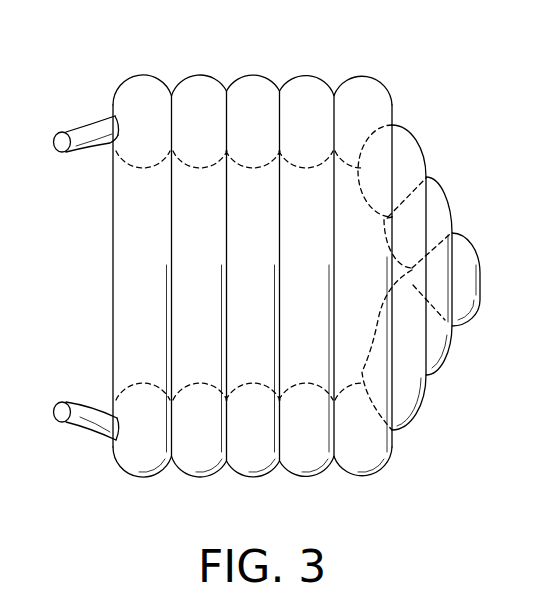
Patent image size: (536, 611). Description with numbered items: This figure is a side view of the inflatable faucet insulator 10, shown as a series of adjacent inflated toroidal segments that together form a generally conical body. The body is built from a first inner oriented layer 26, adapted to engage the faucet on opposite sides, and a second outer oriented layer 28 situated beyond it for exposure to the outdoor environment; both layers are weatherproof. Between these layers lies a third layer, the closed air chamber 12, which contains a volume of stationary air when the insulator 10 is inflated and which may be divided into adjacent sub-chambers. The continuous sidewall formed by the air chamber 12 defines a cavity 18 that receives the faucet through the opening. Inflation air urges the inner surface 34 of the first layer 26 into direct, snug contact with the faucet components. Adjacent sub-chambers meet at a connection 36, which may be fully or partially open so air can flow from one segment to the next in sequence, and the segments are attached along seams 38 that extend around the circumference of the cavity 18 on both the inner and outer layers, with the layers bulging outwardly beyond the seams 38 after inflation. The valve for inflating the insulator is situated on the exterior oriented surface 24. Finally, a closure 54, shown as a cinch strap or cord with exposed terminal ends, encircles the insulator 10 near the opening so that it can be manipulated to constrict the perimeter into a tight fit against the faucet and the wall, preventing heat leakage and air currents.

The inflatable insulator 10 is at (406, 67).
The air chamber 12 is at (316, 129).
The cavity 18 is at (266, 272).
The exterior oriented surface 24 is at (254, 66).
The first inner oriented layer 26 is at (191, 167).
The second outer oriented layer 28 is at (200, 73).
The inner surface 34 is at (247, 180).
The connection 36 is at (453, 340).
The seam 38 is at (429, 378).
The closure 54 is at (83, 132).